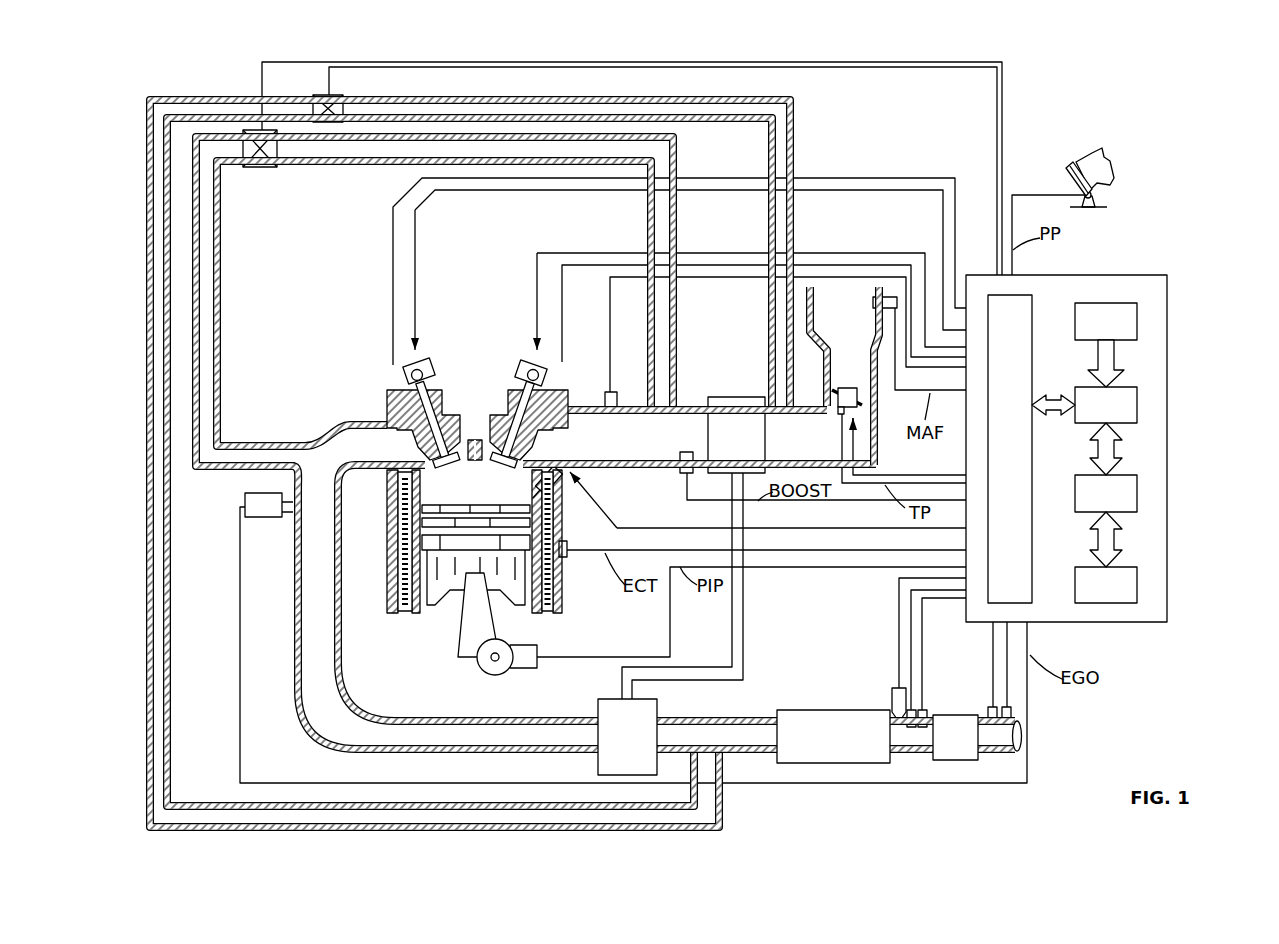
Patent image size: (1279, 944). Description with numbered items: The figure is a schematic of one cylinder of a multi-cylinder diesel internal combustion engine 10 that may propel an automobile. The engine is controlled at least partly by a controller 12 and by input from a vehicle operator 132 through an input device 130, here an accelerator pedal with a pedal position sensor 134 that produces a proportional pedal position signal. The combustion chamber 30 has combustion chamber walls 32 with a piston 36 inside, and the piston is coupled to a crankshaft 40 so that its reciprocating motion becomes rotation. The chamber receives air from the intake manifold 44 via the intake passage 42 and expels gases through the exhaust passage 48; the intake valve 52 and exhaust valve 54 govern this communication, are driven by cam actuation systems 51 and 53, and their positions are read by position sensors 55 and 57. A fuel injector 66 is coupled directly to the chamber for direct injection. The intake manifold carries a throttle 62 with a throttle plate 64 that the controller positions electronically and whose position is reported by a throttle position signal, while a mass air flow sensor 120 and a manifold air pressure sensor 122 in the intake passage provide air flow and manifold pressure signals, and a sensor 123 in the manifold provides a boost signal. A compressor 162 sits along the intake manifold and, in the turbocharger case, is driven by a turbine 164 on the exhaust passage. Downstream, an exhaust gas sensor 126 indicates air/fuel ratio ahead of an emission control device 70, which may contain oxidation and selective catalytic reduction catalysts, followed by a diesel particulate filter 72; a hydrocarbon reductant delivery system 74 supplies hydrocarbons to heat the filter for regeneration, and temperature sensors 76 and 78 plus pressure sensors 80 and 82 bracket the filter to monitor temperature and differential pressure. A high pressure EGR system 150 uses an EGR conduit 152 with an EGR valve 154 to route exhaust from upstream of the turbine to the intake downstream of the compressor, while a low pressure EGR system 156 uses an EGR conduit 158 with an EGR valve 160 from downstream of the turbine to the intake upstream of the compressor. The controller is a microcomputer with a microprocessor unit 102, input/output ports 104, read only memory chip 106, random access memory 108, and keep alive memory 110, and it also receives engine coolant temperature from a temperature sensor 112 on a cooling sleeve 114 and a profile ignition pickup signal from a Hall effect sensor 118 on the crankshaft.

The internal combustion engine 10 is at (328, 348).
The controller 12 is at (1104, 437).
The combustion chamber 30 is at (405, 558).
The combustion chamber walls 32 is at (443, 600).
The piston 36 is at (476, 478).
The crankshaft 40 is at (483, 670).
The intake passage 42 is at (834, 327).
The intake manifold 44 is at (601, 442).
The exhaust passage 48 is at (345, 454).
The cam actuation system 51 is at (527, 362).
The intake valve 52 is at (526, 456).
The cam actuation system 53 is at (425, 362).
The exhaust valve 54 is at (432, 456).
The position sensor 55 is at (548, 380).
The position sensor 57 is at (405, 368).
The throttle 62 is at (860, 399).
The throttle plate 64 is at (838, 390).
The fuel injector 66 is at (549, 495).
The emission control device 70 is at (833, 736).
The diesel particulate filter 72 is at (955, 737).
The hydrocarbon reductant delivery system 74 is at (897, 688).
The temperature sensor 76 is at (913, 708).
The temperature sensor 78 is at (992, 705).
The pressure sensor 80 is at (925, 708).
The pressure sensor 82 is at (1012, 707).
The microprocessor unit 102 is at (1137, 405).
The input/output ports 104 is at (1032, 300).
The read only memory chip 106 is at (1137, 318).
The random access memory 108 is at (1137, 495).
The keep alive memory 110 is at (1137, 585).
The temperature sensor 112 is at (568, 557).
The cooling sleeve 114 is at (560, 598).
The Hall effect sensor 118 is at (532, 669).
The mass air flow sensor 120 is at (898, 298).
The manifold air pressure sensor 122 is at (609, 392).
The sensor 123 is at (684, 476).
The exhaust gas sensor 126 is at (248, 496).
The input device 130 is at (1075, 180).
The vehicle operator 132 is at (1112, 164).
The pedal position sensor 134 is at (1100, 196).
The high pressure EGR system 150 is at (236, 314).
The EGR conduit 152 is at (219, 258).
The EGR valve 154 is at (262, 168).
The low pressure EGR system 156 is at (190, 726).
The EGR conduit 158 is at (156, 628).
The EGR valve 160 is at (340, 96).
The compressor 162 is at (723, 442).
The turbine 164 is at (614, 747).